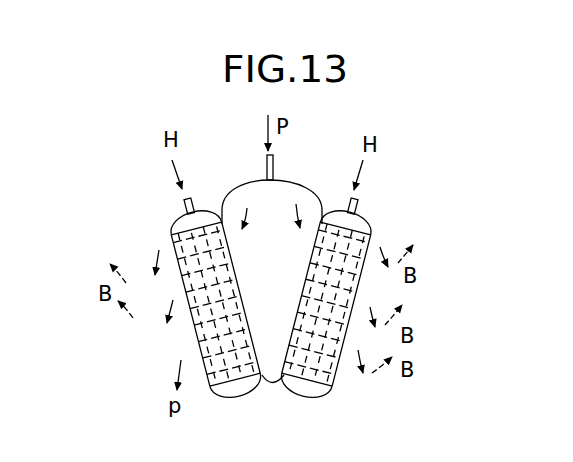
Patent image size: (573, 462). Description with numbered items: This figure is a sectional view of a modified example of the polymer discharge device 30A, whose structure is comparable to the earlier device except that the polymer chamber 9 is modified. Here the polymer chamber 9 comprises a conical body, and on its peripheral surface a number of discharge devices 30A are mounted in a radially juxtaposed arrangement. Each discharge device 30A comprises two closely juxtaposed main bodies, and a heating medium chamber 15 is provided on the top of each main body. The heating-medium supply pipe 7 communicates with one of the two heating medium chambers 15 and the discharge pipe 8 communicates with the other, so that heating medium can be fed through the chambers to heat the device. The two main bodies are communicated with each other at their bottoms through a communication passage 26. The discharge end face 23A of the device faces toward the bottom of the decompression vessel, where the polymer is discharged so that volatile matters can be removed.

The heating-medium supply pipe 7 is at (185, 200).
The discharge pipe 8 is at (357, 203).
The polymer chamber 9 is at (249, 182).
The heating medium chamber 15 is at (181, 218).
The discharge end face 23A is at (192, 333).
The communication passage 26 is at (243, 398).
The polymer discharge device 30A is at (160, 232).